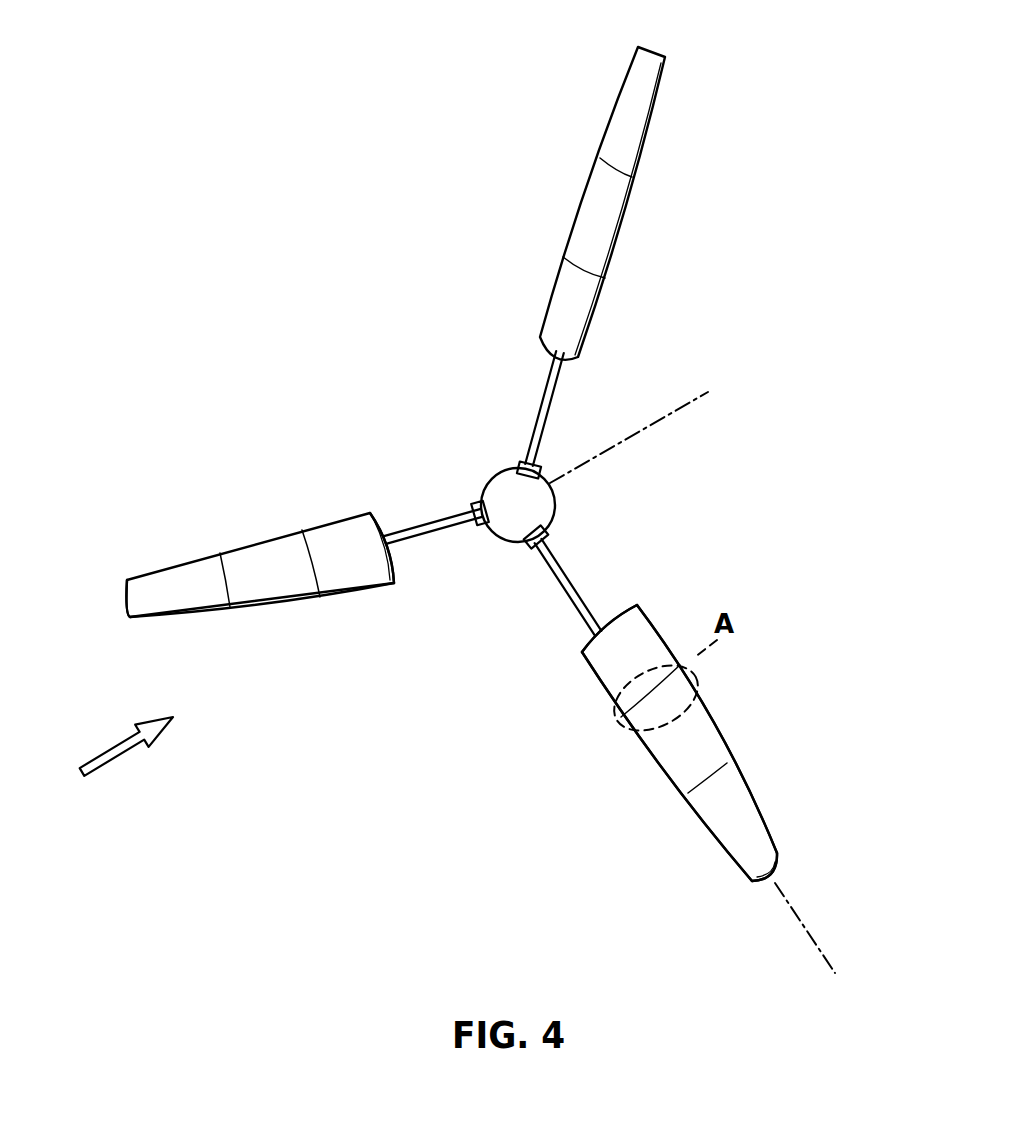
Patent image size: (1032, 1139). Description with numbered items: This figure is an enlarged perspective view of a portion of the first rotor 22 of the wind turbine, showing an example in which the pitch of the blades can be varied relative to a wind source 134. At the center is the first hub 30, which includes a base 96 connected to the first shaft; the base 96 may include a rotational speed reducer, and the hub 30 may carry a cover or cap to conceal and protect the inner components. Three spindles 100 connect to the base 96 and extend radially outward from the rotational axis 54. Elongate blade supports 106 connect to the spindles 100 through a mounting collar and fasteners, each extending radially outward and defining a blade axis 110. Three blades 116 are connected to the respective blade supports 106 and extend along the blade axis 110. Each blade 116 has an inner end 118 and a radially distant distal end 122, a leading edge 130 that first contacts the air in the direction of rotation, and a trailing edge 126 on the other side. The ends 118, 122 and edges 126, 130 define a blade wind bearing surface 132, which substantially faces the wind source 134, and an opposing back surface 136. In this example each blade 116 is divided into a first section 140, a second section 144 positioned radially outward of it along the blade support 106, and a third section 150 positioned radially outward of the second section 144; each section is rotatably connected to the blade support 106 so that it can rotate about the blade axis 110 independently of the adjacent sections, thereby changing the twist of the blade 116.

The first rotor 22 is at (652, 295).
The first hub 30 is at (503, 560).
The rotational axis 54 is at (687, 400).
The base 96 is at (531, 484).
The spindles 100 is at (544, 530).
The blade supports 106 is at (578, 590).
The blade axis 110 is at (807, 927).
The blades 116 is at (195, 542).
The inner end 118 is at (627, 607).
The distal end 122 is at (772, 870).
The trailing edge 126 is at (702, 712).
The leading edge 130 is at (588, 667).
The blade wind bearing surface 132 is at (350, 533).
The wind source 134 is at (110, 741).
The back surface 136 is at (383, 520).
The first section 140 is at (353, 580).
The second section 144 is at (277, 585).
The third section 150 is at (180, 595).